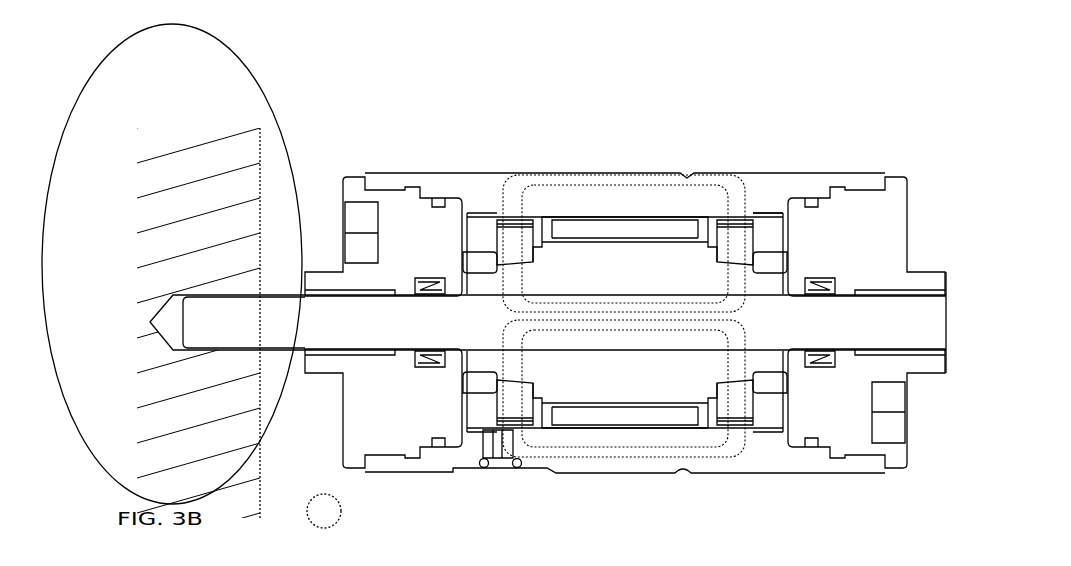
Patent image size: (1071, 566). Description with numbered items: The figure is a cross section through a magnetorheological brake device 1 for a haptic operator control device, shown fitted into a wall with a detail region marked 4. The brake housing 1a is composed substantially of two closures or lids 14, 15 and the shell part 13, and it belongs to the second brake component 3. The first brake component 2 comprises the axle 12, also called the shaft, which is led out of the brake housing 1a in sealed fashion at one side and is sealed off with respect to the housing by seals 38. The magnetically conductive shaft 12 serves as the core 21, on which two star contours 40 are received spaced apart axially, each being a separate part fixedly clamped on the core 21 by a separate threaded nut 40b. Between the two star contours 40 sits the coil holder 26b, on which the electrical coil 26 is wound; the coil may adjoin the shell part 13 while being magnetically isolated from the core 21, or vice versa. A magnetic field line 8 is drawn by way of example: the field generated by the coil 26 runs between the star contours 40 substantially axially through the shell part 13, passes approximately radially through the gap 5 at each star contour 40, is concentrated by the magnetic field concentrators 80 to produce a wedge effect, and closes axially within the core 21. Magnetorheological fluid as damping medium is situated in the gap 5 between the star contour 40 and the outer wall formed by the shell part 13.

The magnetorheological brake device 1 is at (286, 145).
The brake housing 1a is at (343, 177).
The first brake component 2 is at (213, 353).
The second brake component 3 is at (852, 165).
The enlarged region 4 is at (226, 470).
The gap 5 is at (737, 426).
The magnetic field line 8 is at (563, 177).
The axle 12 is at (270, 322).
The shell part 13 is at (465, 180).
The lid 14 is at (355, 418).
The lid 15 is at (893, 207).
The core 21 is at (601, 390).
The electrical coil 26 is at (605, 219).
The coil holder 26b is at (668, 237).
The seal 38 is at (426, 276).
The star contour 40 is at (512, 216).
The threaded nut 40b is at (479, 390).
The magnetic field concentrator 80 is at (750, 220).